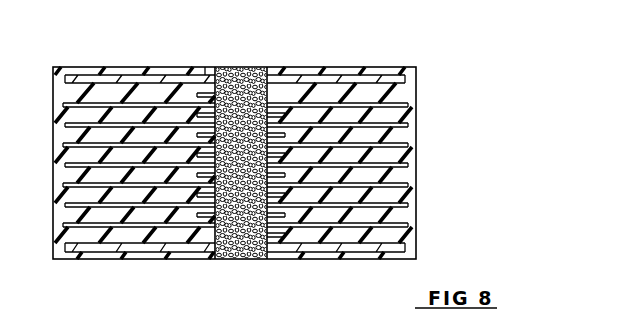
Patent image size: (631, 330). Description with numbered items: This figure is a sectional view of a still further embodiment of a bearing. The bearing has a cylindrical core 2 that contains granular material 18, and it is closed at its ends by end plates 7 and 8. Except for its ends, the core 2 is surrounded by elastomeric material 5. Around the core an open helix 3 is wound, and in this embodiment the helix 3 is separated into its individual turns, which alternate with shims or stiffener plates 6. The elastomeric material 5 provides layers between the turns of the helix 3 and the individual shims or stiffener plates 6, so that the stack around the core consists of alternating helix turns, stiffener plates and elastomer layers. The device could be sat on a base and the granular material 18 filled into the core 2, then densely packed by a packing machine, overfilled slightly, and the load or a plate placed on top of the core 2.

The cylindrical core 2 is at (236, 67).
The open helix 3 is at (203, 67).
The elastomeric material 5 is at (416, 133).
The shims or stiffener plates 6 is at (408, 122).
The end plate 7 is at (386, 75).
The end plate 8 is at (405, 248).
The granular material 18 is at (245, 260).